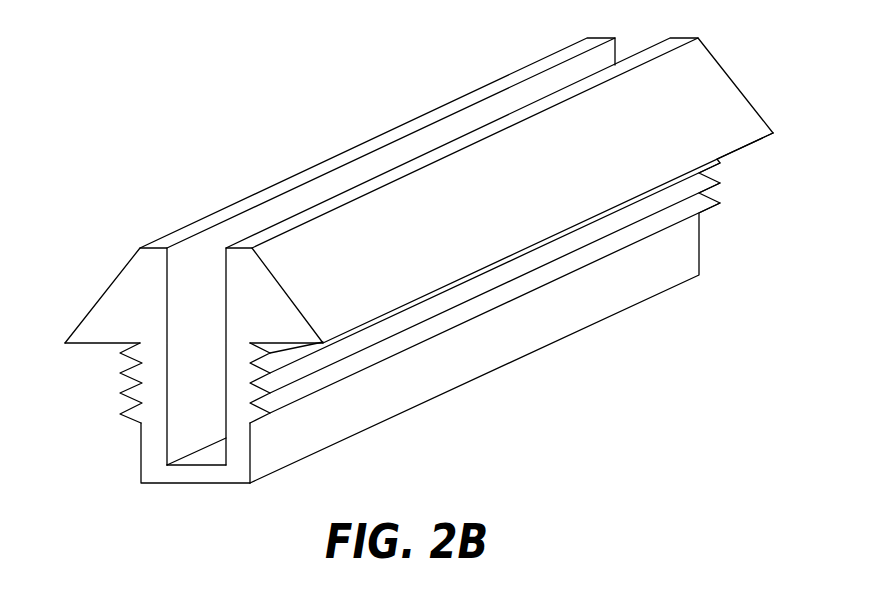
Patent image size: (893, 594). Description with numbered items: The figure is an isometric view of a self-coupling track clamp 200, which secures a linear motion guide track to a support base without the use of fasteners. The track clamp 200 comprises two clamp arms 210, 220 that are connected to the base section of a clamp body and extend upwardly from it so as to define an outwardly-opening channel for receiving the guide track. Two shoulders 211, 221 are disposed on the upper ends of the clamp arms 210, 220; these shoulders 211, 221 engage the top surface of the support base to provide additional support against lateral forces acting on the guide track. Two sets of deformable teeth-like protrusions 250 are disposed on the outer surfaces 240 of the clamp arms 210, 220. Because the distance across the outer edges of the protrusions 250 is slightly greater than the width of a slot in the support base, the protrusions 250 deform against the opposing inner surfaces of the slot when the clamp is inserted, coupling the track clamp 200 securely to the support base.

The self-coupling track clamp 200 is at (419, 257).
The clamp arm 210 is at (340, 251).
The shoulder 211 is at (144, 331).
The clamp arm 220 is at (466, 260).
The shoulder 221 is at (280, 330).
The outer surface 240 is at (141, 447).
The deformable teeth-like protrusions 250 is at (118, 348).